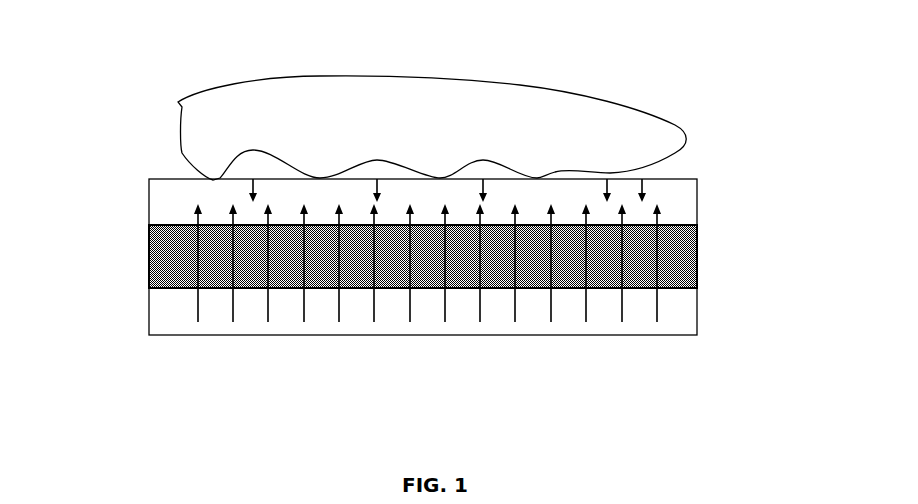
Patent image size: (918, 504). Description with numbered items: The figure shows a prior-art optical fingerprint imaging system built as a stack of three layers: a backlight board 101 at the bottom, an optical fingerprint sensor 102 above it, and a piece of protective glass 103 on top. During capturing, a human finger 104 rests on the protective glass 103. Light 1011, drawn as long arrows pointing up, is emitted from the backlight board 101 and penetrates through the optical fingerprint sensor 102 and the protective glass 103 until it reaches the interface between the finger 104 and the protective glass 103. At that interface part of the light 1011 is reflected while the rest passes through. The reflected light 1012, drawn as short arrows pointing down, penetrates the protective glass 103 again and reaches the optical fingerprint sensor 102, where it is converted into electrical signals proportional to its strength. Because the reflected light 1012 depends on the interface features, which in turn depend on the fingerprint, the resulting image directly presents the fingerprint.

The backlight board 101 is at (677, 320).
The optical fingerprint sensor 102 is at (677, 257).
The protective glass 103 is at (677, 198).
The finger 104 is at (358, 90).
The light 1011 is at (198, 305).
The reflected light 1012 is at (252, 197).